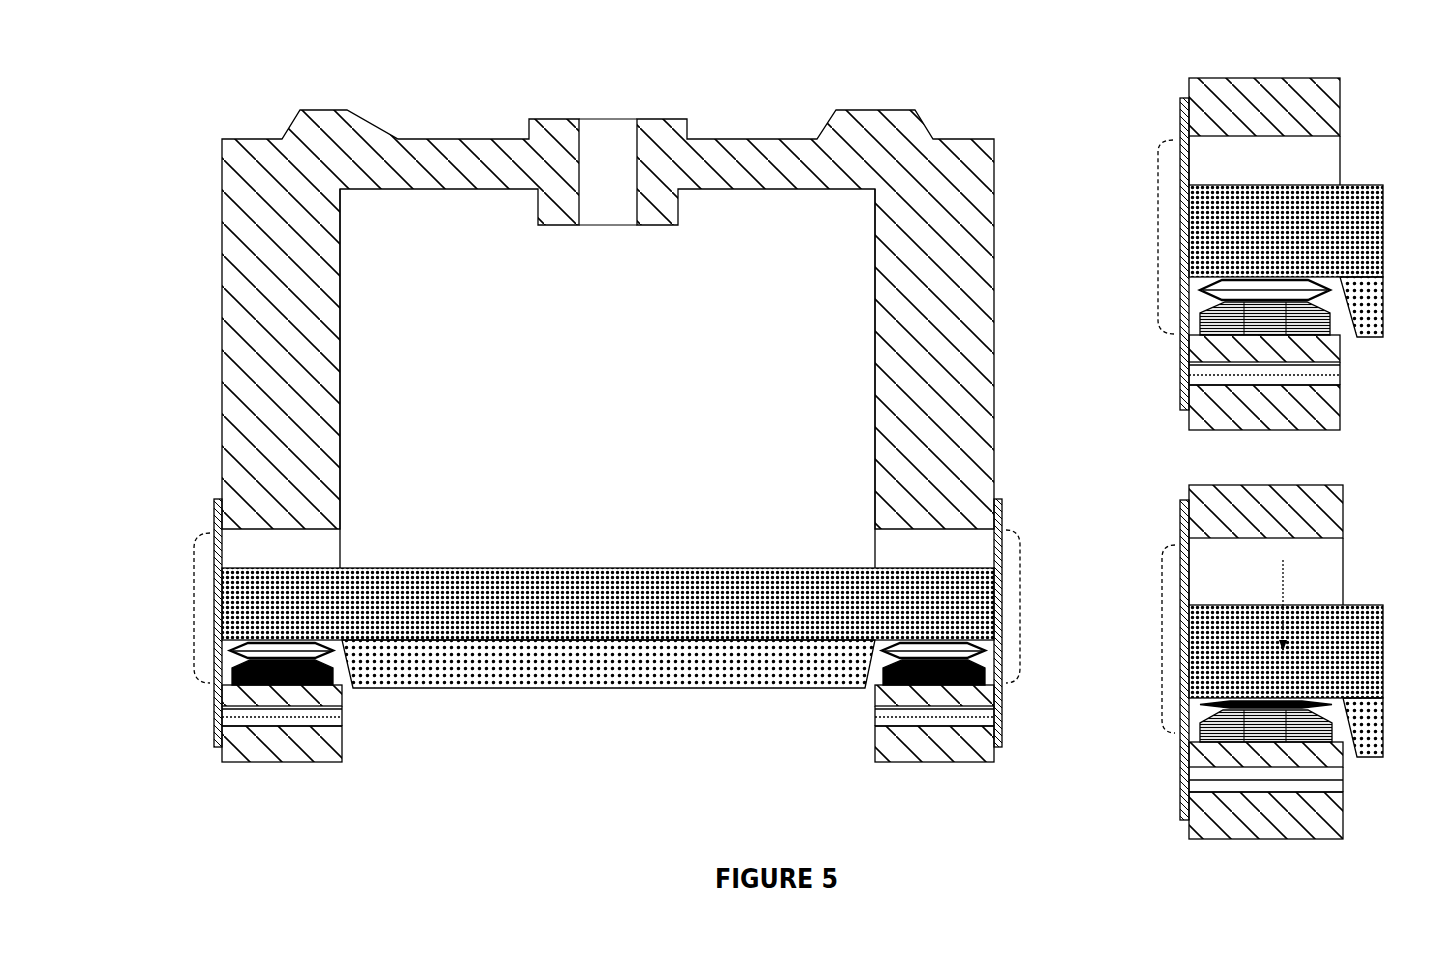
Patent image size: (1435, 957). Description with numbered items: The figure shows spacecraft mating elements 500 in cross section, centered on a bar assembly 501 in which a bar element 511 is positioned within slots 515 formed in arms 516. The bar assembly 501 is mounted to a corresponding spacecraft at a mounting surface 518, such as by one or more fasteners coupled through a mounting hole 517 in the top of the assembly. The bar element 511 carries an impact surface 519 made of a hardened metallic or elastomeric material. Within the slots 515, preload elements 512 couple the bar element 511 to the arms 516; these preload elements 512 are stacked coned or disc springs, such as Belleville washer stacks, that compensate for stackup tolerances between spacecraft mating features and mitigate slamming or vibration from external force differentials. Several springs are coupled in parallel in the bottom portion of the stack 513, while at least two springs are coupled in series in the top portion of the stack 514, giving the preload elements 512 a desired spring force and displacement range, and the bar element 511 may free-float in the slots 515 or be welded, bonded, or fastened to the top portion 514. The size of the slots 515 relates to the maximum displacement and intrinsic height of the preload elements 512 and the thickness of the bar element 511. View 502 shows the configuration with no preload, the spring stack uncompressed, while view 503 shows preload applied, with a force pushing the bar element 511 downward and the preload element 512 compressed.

The actuator assembly 500 is at (216, 52).
The bar assembly 501 is at (213, 208).
The view without preload 502 is at (1173, 65).
The view with preload applied 503 is at (1173, 478).
The bar element 511 is at (502, 582).
The preload elements 512 is at (224, 645).
The bottom portion of the stack 513 is at (224, 677).
The top portion of the stack 514 is at (224, 658).
The slots 515 is at (193, 608).
The arms 516 is at (345, 462).
The mounting hole 517 is at (606, 198).
The mounting surface 518 is at (493, 128).
The impact surface 519 is at (497, 676).